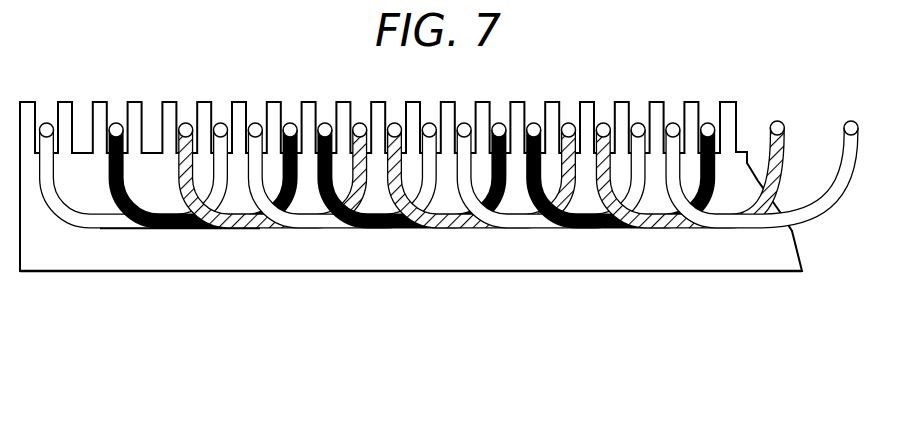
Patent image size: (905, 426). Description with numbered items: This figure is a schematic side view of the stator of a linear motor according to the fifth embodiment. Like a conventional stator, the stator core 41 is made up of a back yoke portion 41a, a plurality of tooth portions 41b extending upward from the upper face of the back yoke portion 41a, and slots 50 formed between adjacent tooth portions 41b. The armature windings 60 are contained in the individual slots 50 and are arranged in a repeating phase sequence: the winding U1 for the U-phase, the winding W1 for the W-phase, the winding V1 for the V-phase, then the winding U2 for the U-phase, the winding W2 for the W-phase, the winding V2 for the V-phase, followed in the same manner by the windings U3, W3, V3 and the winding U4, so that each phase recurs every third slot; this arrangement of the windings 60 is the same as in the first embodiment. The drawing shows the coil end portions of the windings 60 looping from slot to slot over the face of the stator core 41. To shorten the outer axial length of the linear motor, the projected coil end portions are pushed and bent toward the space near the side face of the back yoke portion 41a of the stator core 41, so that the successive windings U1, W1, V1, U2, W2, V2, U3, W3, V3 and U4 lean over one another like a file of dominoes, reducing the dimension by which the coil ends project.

The stator core 41 is at (395, 272).
The back yoke portion 41a is at (315, 253).
The tooth portions 41b is at (242, 101).
The slots 50 is at (258, 108).
The armature windings 60 is at (180, 233).
The winding for the U-phase U1 is at (117, 230).
The winding for the W-phase W1 is at (200, 230).
The winding for the V-phase V1 is at (273, 230).
The winding for the U-phase U2 is at (338, 230).
The winding for the W-phase W2 is at (412, 230).
The winding for the V-phase V2 is at (480, 230).
The winding for the U-phase U3 is at (547, 230).
The winding for the W-phase W3 is at (613, 230).
The winding for the V-phase V3 is at (680, 230).
The winding for the U-phase U4 is at (743, 228).